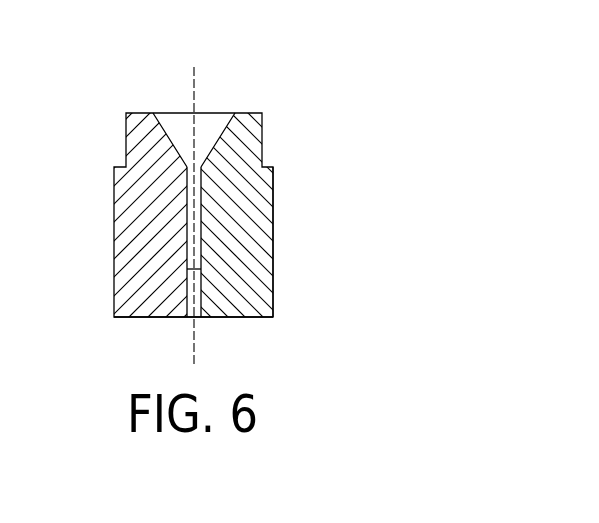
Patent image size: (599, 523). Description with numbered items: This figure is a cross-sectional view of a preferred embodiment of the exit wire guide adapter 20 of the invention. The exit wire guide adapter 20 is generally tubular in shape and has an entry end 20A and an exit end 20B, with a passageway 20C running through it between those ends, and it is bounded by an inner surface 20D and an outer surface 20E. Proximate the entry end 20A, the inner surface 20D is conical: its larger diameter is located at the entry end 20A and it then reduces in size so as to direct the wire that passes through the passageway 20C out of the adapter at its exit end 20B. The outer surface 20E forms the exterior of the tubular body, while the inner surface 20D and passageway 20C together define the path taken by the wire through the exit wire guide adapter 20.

The exit wire guide adapter 20 is at (114, 242).
The entry end 20A is at (218, 124).
The exit end 20B is at (245, 317).
The passageway 20C is at (263, 269).
The inner surface 20D is at (203, 166).
The outer surface 20E is at (273, 207).